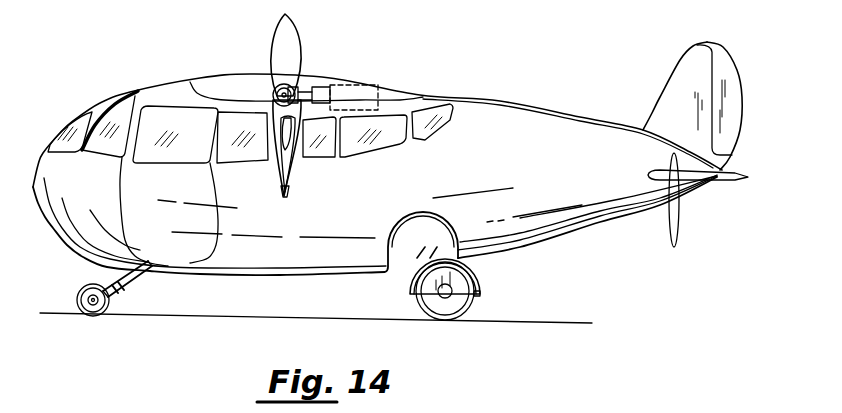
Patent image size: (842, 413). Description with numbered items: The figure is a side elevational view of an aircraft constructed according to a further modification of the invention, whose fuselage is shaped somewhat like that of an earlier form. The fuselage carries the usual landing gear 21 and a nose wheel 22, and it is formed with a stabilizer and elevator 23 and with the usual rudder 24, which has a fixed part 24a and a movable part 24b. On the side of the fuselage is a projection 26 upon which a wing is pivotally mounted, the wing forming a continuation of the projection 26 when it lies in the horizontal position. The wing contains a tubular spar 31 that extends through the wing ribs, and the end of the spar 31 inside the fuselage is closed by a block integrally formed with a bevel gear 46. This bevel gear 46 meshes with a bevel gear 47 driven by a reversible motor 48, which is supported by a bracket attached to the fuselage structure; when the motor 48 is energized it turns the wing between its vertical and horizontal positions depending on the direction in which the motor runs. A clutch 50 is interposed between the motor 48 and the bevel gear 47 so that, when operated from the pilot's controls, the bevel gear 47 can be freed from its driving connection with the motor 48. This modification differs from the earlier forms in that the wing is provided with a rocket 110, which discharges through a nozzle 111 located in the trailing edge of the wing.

The landing gear 21 is at (480, 288).
The nose wheel 22 is at (110, 312).
The stabilizer and elevator 23 is at (718, 178).
The rudder 24 is at (731, 108).
The fixed part of rudder 24a is at (686, 82).
The movable part of rudder 24b is at (721, 67).
The projection 26 is at (397, 98).
The tubular spar 31 is at (292, 78).
The bevel gear 46 is at (275, 88).
The bevel gear 47 is at (299, 84).
The reversible motor 48 is at (372, 86).
The clutch 50 is at (300, 104).
The rocket 110 is at (289, 141).
The nozzle 111 is at (285, 195).